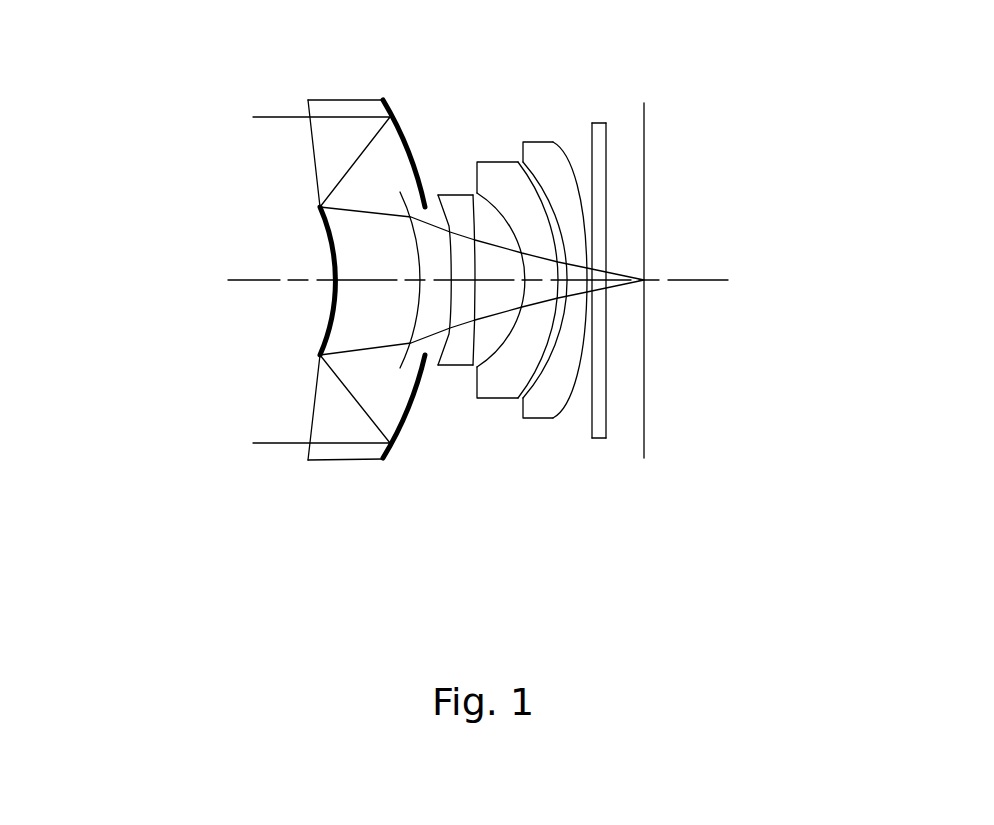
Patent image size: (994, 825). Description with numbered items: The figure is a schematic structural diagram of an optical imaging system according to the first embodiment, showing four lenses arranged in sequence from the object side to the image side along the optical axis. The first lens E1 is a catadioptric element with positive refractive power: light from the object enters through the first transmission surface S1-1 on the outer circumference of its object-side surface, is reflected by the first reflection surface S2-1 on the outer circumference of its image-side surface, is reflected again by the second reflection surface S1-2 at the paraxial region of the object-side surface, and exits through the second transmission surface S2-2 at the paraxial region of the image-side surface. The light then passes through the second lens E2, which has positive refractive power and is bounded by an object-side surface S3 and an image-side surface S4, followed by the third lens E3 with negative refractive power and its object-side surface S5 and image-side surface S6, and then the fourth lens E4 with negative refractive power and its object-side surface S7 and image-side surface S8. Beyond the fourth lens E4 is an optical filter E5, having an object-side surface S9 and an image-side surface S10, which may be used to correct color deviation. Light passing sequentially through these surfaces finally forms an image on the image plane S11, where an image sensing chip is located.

The first lens E1 is at (226, 312).
The second lens E2 is at (416, 312).
The third lens E3 is at (509, 312).
The fourth lens E4 is at (593, 312).
The optical filter E5 is at (709, 312).
The first transmission surface S1-1 is at (314, 410).
The second reflection surface S1-2 is at (336, 282).
The first reflection surface S2-1 is at (420, 281).
The second transmission surface S2-2 is at (419, 283).
The object-side surface of the second lens S3 is at (450, 280).
The image-side surface of the second lens S4 is at (473, 281).
The object-side surface of the third lens S5 is at (526, 282).
The image-side surface of the third lens S6 is at (558, 285).
The object-side surface of the fourth lens S7 is at (569, 286).
The image-side surface of the fourth lens S8 is at (587, 288).
The object-side surface of the optical filter S9 is at (593, 285).
The image-side surface of the optical filter S10 is at (607, 285).
The image plane S11 is at (644, 281).